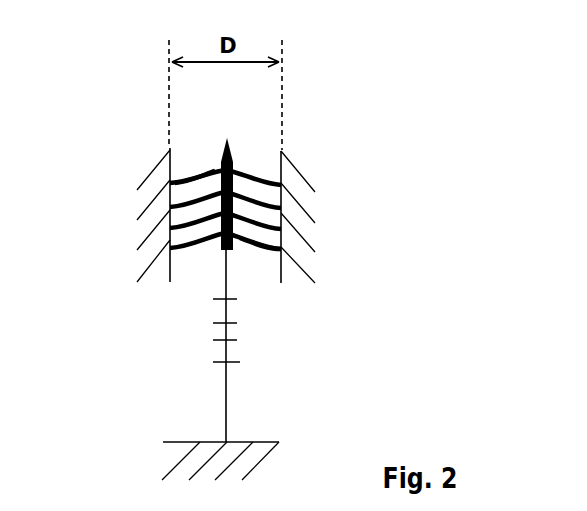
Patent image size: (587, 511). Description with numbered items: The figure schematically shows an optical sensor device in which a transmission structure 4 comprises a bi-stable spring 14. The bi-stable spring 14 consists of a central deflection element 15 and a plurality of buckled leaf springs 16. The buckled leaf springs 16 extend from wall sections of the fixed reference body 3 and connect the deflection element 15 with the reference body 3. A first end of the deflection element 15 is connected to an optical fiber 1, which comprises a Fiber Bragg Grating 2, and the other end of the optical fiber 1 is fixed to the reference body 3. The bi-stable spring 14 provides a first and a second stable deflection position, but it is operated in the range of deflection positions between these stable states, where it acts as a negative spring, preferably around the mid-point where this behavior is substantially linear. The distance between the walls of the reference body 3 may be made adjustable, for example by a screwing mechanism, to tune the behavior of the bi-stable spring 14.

The optical fiber 1 is at (225, 276).
The Fiber Bragg Grating 2 is at (222, 328).
The fixed reference body 3 is at (146, 172).
The transmission structure 4 is at (246, 166).
The bi-stable spring 14 is at (210, 170).
The deflection element 15 is at (224, 158).
The buckled leaf springs 16 is at (253, 250).